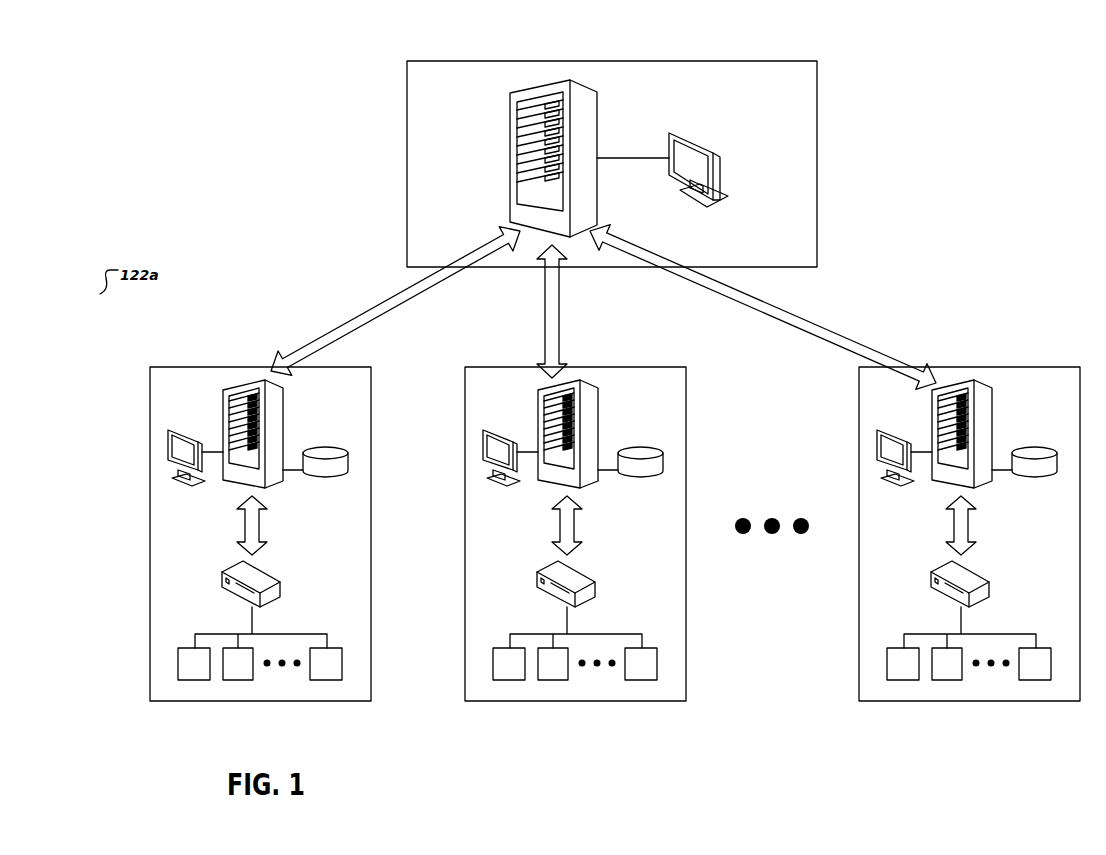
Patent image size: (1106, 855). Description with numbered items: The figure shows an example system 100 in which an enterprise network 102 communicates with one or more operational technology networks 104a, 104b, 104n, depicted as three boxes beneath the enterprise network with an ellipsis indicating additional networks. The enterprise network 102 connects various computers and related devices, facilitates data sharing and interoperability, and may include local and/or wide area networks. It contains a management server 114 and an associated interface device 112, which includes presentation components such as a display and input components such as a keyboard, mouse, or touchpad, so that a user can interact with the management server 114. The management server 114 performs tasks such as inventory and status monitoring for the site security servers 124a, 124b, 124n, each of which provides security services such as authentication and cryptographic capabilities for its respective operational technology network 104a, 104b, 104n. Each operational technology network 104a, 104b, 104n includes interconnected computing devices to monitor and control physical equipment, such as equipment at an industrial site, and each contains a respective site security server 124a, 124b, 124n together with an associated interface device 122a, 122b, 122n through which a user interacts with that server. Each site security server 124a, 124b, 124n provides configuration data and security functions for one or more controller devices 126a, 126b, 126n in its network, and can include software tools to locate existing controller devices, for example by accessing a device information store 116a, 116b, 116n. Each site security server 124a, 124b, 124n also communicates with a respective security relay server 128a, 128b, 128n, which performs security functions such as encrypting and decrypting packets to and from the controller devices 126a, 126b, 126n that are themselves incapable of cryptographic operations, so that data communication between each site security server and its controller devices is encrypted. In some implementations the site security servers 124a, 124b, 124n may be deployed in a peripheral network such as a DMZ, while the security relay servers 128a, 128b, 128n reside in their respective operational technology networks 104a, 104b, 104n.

The system 100 is at (106, 78).
The enterprise network 102 is at (613, 153).
The operational technology network 104a is at (260, 522).
The operational technology network 104b is at (576, 522).
The operational technology network 104n is at (970, 522).
The interface device 112 is at (725, 168).
The management server 114 is at (525, 153).
The device information store 116a is at (333, 447).
The device information store 116b is at (648, 447).
The device information store 116n is at (1042, 447).
The interface device 122a is at (191, 442).
The interface device 122b is at (507, 442).
The interface device 122n is at (900, 442).
The site security server 124a is at (287, 434).
The site security server 124b is at (602, 434).
The site security server 124n is at (996, 434).
The controller devices 126a is at (217, 660).
The controller devices 126b is at (532, 660).
The controller devices 126n is at (926, 660).
The security relay server 128a is at (285, 584).
The security relay server 128b is at (600, 584).
The security relay server 128n is at (994, 584).